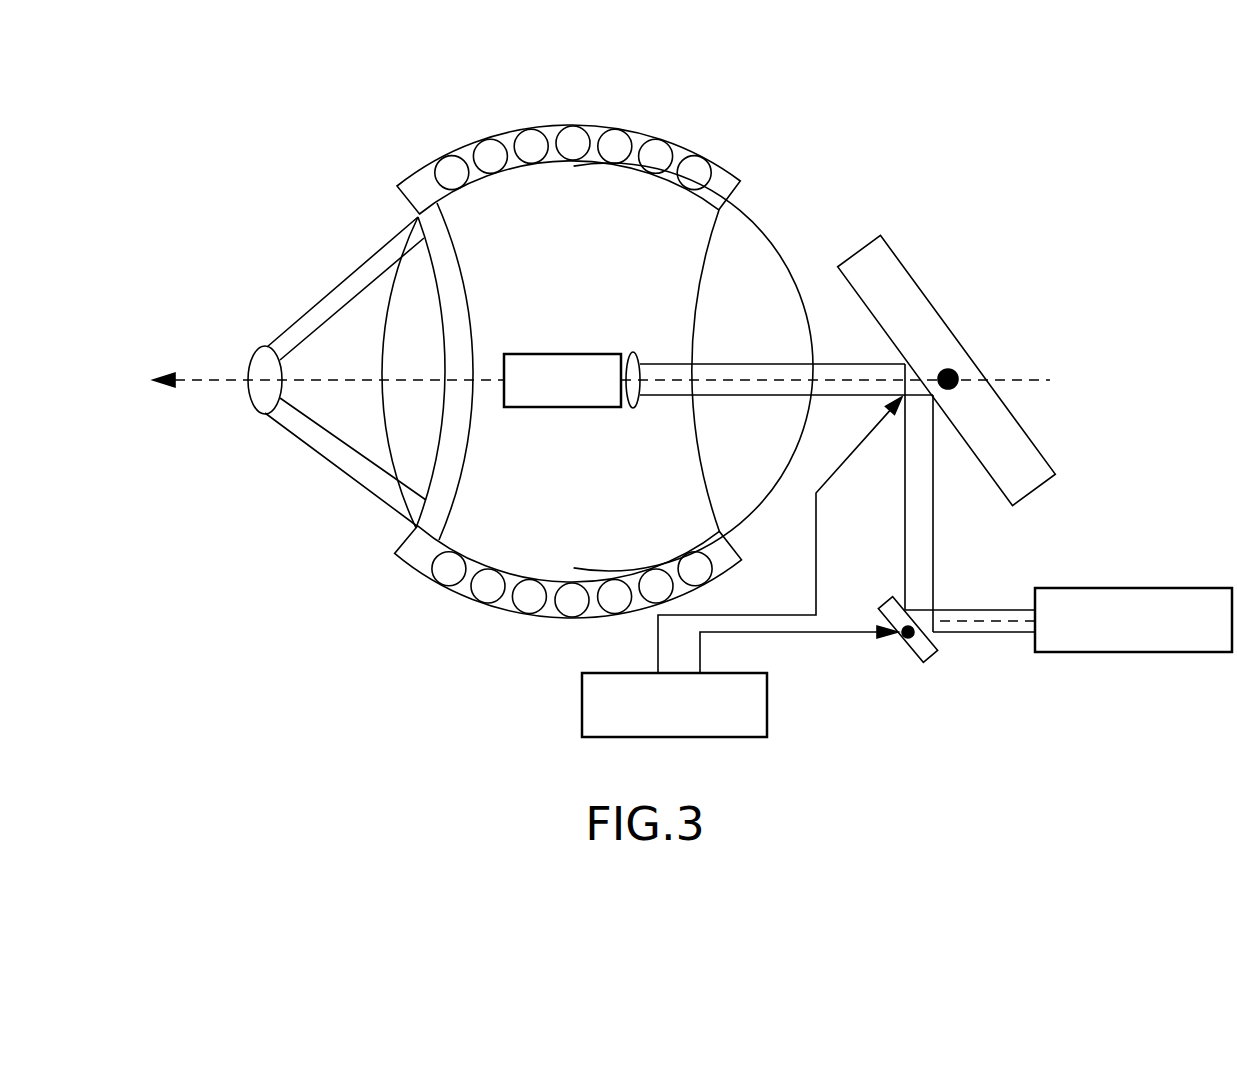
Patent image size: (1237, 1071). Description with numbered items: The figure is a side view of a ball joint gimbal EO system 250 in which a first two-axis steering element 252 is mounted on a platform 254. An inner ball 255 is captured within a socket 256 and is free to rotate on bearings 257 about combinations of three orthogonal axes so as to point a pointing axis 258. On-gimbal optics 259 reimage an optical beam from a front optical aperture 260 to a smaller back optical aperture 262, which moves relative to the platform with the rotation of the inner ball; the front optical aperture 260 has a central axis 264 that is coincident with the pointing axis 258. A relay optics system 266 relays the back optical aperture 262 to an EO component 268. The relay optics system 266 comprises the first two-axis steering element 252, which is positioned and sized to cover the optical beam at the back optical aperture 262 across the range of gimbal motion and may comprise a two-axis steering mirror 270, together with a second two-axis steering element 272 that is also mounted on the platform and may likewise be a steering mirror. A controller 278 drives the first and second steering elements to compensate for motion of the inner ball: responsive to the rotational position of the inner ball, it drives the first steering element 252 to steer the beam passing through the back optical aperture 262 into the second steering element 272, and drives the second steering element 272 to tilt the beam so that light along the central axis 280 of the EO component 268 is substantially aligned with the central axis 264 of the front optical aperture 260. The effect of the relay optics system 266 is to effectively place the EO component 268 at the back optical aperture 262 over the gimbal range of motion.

The ball joint gimbal EO system 250 is at (247, 181).
The first two-axis steering element 252 is at (960, 240).
The platform 254 is at (336, 680).
The inner ball 255 is at (773, 248).
The socket 256 is at (740, 170).
The bearings 257 is at (575, 137).
The pointing axis 258 is at (195, 380).
The on-gimbal optics 259 is at (558, 354).
The front optical aperture 260 is at (418, 282).
The back optical aperture 262 is at (630, 410).
The central axis 264 is at (342, 380).
The relay optics system 266 is at (1058, 397).
The EO component 268 is at (1117, 588).
The two-axis steering mirror 270 is at (935, 310).
The second two-axis steering element 272 is at (905, 642).
The controller 278 is at (582, 700).
The central axis 280 is at (1013, 620).